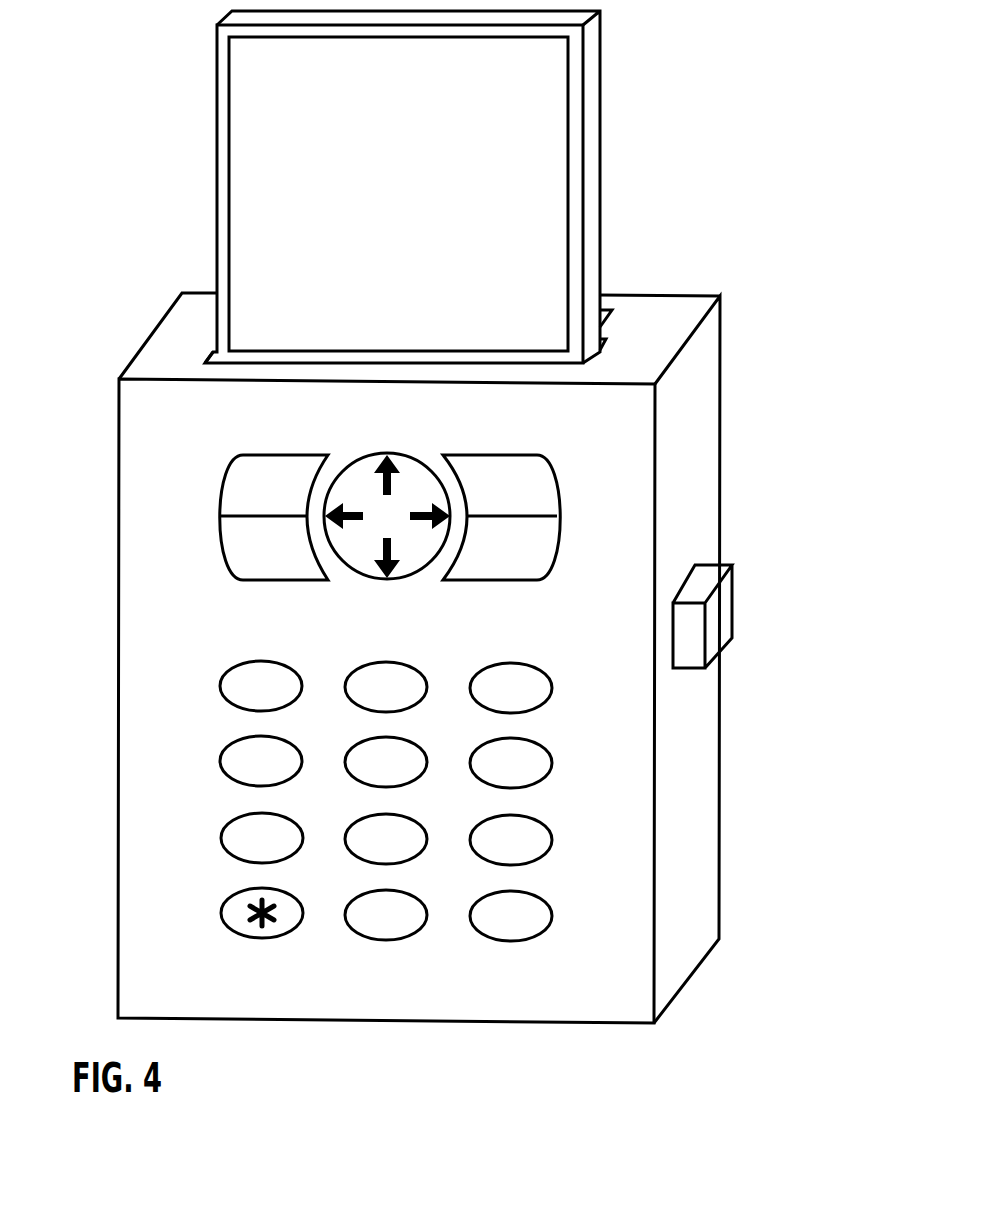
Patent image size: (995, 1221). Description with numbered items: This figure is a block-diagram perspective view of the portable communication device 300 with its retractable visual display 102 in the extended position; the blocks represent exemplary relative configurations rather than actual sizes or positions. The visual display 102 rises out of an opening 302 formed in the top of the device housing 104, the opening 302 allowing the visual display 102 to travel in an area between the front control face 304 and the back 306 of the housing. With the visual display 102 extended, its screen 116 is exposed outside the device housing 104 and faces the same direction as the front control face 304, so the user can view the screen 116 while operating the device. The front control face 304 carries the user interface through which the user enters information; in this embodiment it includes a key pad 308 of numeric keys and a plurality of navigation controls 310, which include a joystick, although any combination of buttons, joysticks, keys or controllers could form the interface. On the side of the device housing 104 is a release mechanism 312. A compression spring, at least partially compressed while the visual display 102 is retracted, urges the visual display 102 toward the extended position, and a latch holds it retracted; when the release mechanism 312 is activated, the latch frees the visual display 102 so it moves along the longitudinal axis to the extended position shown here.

The screen 116 is at (568, 117).
The visual display 102 is at (599, 178).
The portable communication device 300 is at (732, 229).
The back 306 is at (681, 265).
The opening 302 is at (213, 356).
The navigation controls 310 is at (165, 501).
The front control face 304 is at (160, 599).
The key pad 308 is at (147, 738).
The release mechanism 312 is at (732, 601).
The device housing 104 is at (719, 878).